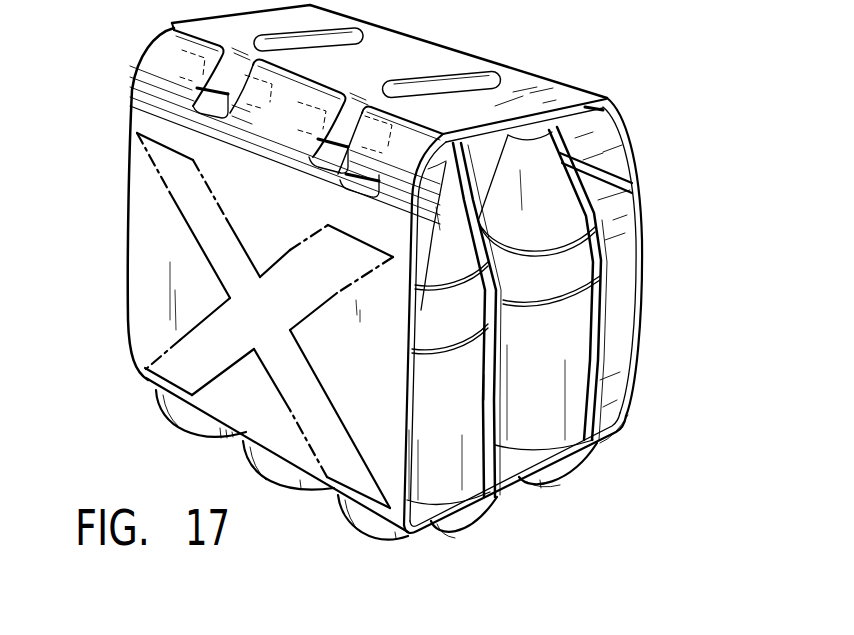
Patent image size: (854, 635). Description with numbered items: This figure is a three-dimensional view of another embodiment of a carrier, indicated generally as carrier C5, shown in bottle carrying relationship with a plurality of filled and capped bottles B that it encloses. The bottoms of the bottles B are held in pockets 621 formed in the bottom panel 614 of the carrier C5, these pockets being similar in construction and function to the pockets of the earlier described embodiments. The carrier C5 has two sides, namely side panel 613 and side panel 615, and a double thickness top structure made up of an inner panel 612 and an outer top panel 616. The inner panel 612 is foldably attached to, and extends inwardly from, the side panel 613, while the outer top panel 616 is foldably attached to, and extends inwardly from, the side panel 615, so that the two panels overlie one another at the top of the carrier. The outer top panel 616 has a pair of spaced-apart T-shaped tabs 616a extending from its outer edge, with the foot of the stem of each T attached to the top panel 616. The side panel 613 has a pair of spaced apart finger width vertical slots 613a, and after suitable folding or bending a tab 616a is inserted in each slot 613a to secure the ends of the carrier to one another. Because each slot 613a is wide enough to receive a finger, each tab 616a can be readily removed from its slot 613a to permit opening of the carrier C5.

The inner panel 612 is at (597, 110).
The side panel 613 is at (144, 217).
The vertical slots 613a is at (337, 141).
The bottom panel 614 is at (502, 493).
The side panel 615 is at (635, 300).
The outer top panel 616 is at (583, 97).
The T-shaped tabs 616a is at (337, 143).
The pockets 621 is at (584, 477).
The bottles B is at (608, 257).
The carrier C5 is at (634, 353).